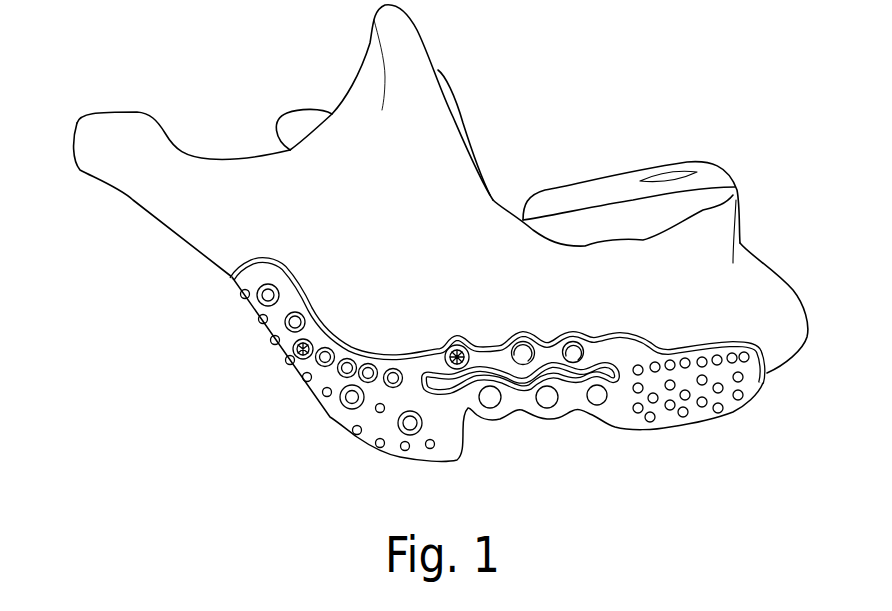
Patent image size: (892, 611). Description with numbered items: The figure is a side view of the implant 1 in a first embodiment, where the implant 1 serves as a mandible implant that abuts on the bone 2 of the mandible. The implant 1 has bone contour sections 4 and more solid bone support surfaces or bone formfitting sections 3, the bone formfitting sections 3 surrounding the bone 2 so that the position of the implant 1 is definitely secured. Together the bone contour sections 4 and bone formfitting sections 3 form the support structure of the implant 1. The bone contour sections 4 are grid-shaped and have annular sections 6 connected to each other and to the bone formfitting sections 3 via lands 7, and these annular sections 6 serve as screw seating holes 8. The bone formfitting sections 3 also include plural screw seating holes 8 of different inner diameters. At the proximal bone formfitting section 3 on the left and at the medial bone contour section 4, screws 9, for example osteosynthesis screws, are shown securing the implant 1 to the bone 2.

The implant 1 is at (473, 395).
The bone 2 is at (182, 203).
The bone formfitting section 3 is at (358, 412).
The bone contour section 4 is at (516, 372).
The annular section 6 is at (516, 340).
The land 7 is at (490, 352).
The screw seating hole 8 is at (264, 295).
The screw 9 is at (286, 357).